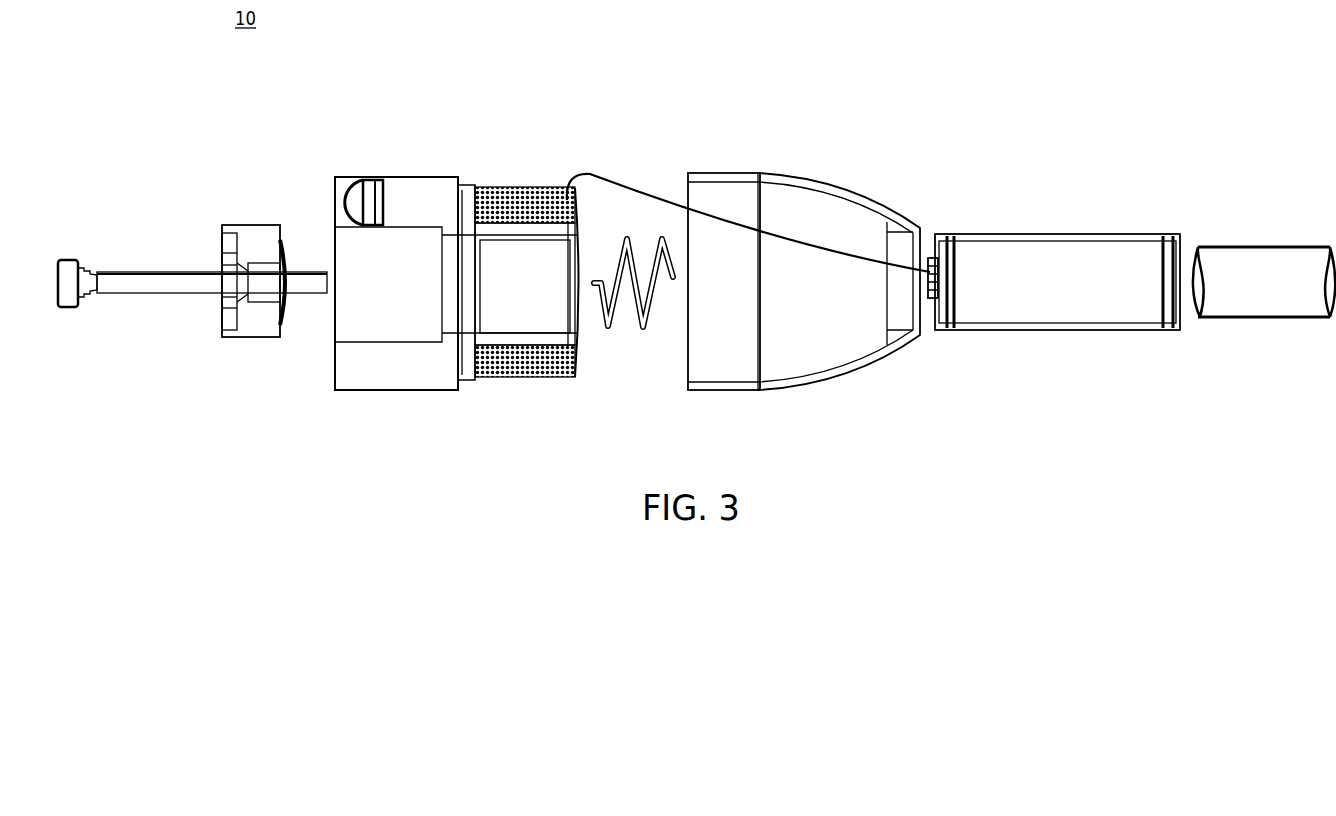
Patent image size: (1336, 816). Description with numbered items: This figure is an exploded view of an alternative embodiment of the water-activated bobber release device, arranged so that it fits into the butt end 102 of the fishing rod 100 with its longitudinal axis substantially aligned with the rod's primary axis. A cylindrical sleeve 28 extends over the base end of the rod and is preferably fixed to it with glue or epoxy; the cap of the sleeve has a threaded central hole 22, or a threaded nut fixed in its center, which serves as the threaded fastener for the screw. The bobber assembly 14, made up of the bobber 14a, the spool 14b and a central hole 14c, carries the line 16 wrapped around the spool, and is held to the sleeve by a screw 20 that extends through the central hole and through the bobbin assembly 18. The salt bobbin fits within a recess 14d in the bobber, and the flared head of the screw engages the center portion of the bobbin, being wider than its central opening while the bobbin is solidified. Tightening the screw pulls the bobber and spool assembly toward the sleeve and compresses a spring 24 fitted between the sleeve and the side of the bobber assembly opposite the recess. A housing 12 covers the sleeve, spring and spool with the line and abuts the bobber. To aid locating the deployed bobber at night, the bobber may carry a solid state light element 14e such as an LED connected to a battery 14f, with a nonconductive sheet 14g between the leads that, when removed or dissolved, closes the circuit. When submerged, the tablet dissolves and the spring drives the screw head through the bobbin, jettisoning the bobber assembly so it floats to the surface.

The housing 12 is at (747, 392).
The bobber assembly 14 is at (411, 266).
The bobber 14a is at (412, 195).
The spool 14b is at (577, 205).
The central hole 14c is at (465, 278).
The recess 14d is at (431, 243).
The solid state light element 14e is at (337, 190).
The battery 14f is at (377, 185).
The nonconductive sheet 14g is at (355, 185).
The line 16 is at (530, 377).
The bobbin assembly 18 is at (253, 337).
The screw 20 is at (178, 289).
The threaded central hole 22 is at (933, 298).
The spring 24 is at (643, 333).
The cylindrical sleeve 28 is at (1093, 325).
The fishing rod 100 is at (1277, 325).
The butt end 102 is at (1247, 245).